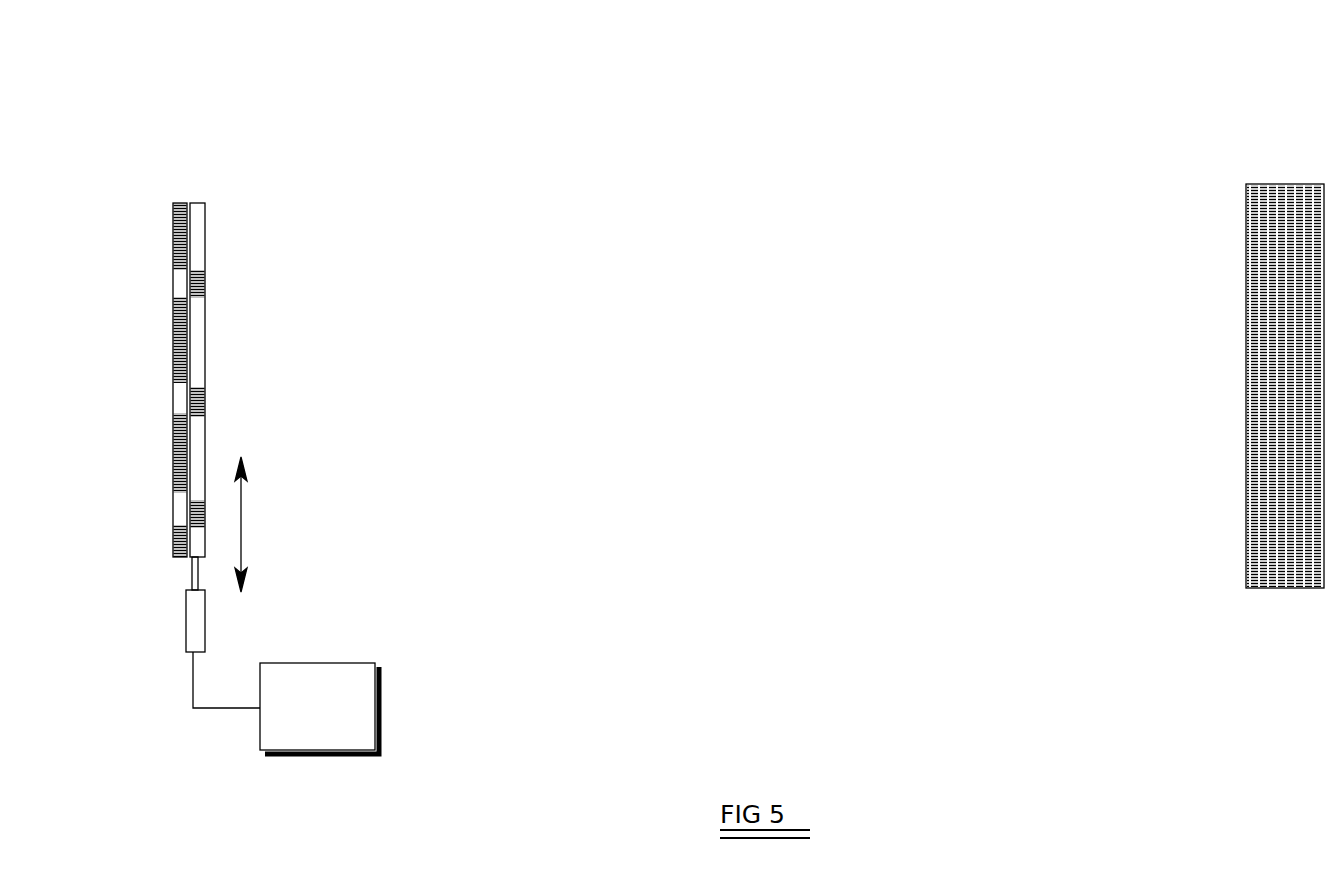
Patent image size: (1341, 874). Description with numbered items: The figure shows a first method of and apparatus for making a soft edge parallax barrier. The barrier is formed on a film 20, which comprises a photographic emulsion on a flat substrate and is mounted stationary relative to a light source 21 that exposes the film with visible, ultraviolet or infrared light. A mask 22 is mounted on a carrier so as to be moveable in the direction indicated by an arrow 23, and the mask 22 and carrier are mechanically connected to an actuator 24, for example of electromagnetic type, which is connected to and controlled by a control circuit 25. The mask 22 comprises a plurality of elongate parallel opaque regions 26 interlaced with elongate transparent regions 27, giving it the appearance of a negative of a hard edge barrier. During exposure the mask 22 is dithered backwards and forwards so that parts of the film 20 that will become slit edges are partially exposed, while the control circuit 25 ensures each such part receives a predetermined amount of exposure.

The film 20 is at (182, 200).
The light source 21 is at (1247, 262).
The mask 22 is at (324, 330).
The arrow 23 is at (243, 543).
The actuator 24 is at (187, 612).
The control circuit 25 is at (298, 663).
The opaque regions 26 is at (205, 290).
The transparent regions 27 is at (203, 345).